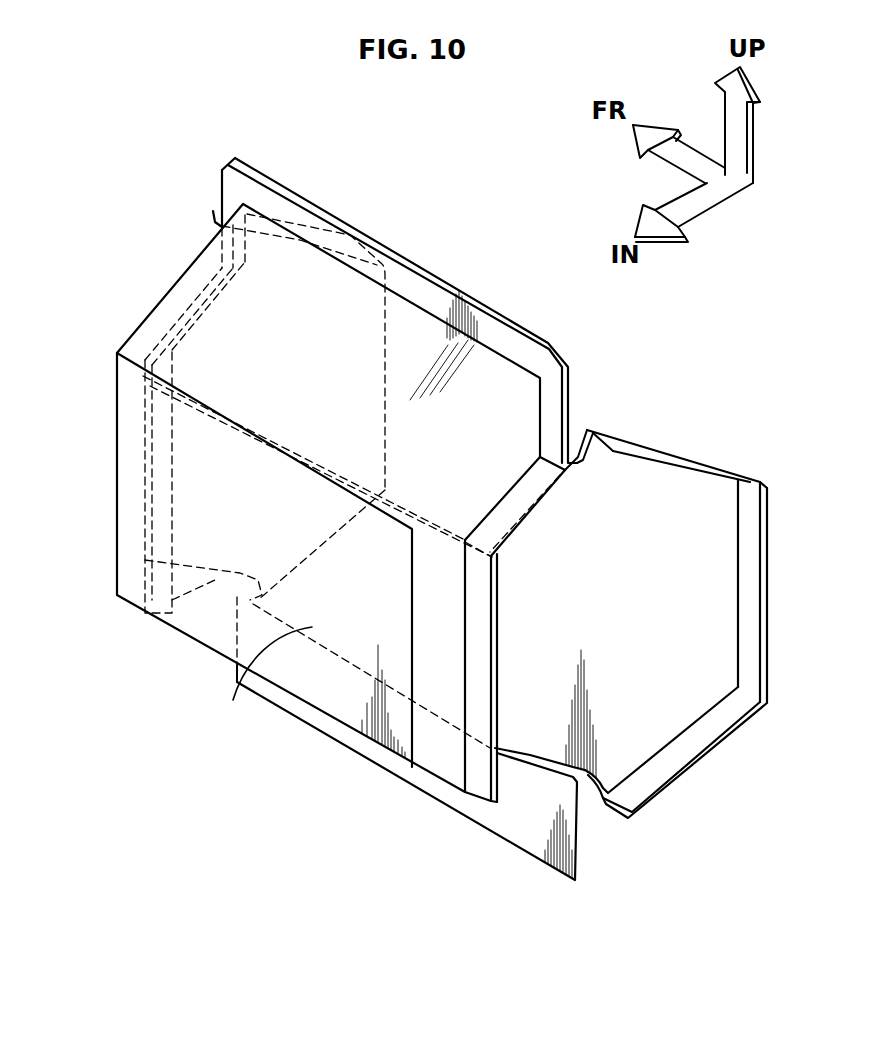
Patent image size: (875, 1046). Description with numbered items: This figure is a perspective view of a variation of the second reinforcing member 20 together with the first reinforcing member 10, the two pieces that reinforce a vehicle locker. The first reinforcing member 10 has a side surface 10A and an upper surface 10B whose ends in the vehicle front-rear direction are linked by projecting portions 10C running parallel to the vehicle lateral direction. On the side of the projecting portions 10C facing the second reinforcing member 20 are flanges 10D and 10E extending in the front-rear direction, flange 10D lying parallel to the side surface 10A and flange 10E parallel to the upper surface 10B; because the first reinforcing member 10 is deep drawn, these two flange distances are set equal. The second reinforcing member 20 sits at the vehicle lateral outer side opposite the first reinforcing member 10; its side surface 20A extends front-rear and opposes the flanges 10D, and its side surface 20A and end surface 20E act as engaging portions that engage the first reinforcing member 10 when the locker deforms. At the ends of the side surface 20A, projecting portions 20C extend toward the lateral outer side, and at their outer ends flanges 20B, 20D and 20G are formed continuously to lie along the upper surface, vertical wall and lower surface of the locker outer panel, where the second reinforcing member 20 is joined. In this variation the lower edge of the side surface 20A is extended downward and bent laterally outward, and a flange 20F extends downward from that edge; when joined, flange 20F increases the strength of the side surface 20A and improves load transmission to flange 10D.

The first reinforcing member 10 is at (455, 283).
The side surface 10A is at (252, 687).
The upper surface 10B is at (497, 373).
The projecting portions 10C is at (128, 422).
The flange 10D is at (145, 567).
The flange 10E is at (177, 317).
The second reinforcing member 20 is at (648, 438).
The side surface 20A is at (325, 648).
The flange 20B is at (350, 235).
The projecting portions 20C is at (325, 372).
The flange 20D is at (767, 573).
The end surface 20E is at (200, 288).
The flange 20F is at (513, 847).
The flange 20G is at (212, 585).